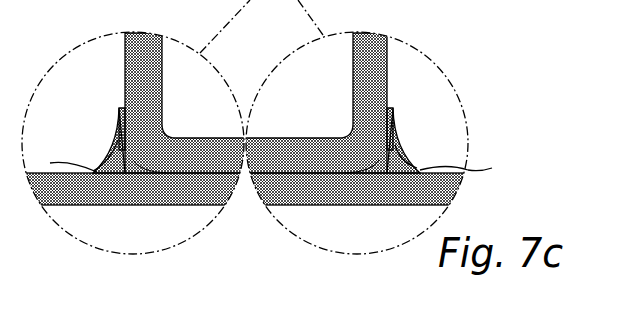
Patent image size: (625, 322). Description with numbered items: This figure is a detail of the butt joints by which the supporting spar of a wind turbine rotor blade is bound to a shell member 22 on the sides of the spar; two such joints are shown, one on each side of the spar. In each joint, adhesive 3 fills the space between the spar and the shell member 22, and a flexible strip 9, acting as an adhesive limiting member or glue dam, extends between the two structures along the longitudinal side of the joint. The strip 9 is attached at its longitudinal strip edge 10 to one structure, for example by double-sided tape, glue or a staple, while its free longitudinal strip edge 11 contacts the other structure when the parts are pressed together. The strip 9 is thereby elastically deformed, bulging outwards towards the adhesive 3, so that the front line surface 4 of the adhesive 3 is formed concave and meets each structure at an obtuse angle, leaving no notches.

The adhesive 3 is at (118, 125).
The front line surface 4 is at (105, 160).
The flexible strip 9 is at (115, 152).
The longitudinal strip edge 10 is at (122, 107).
The free longitudinal strip edge 11 is at (270, 166).
The shell member 22 is at (125, 192).